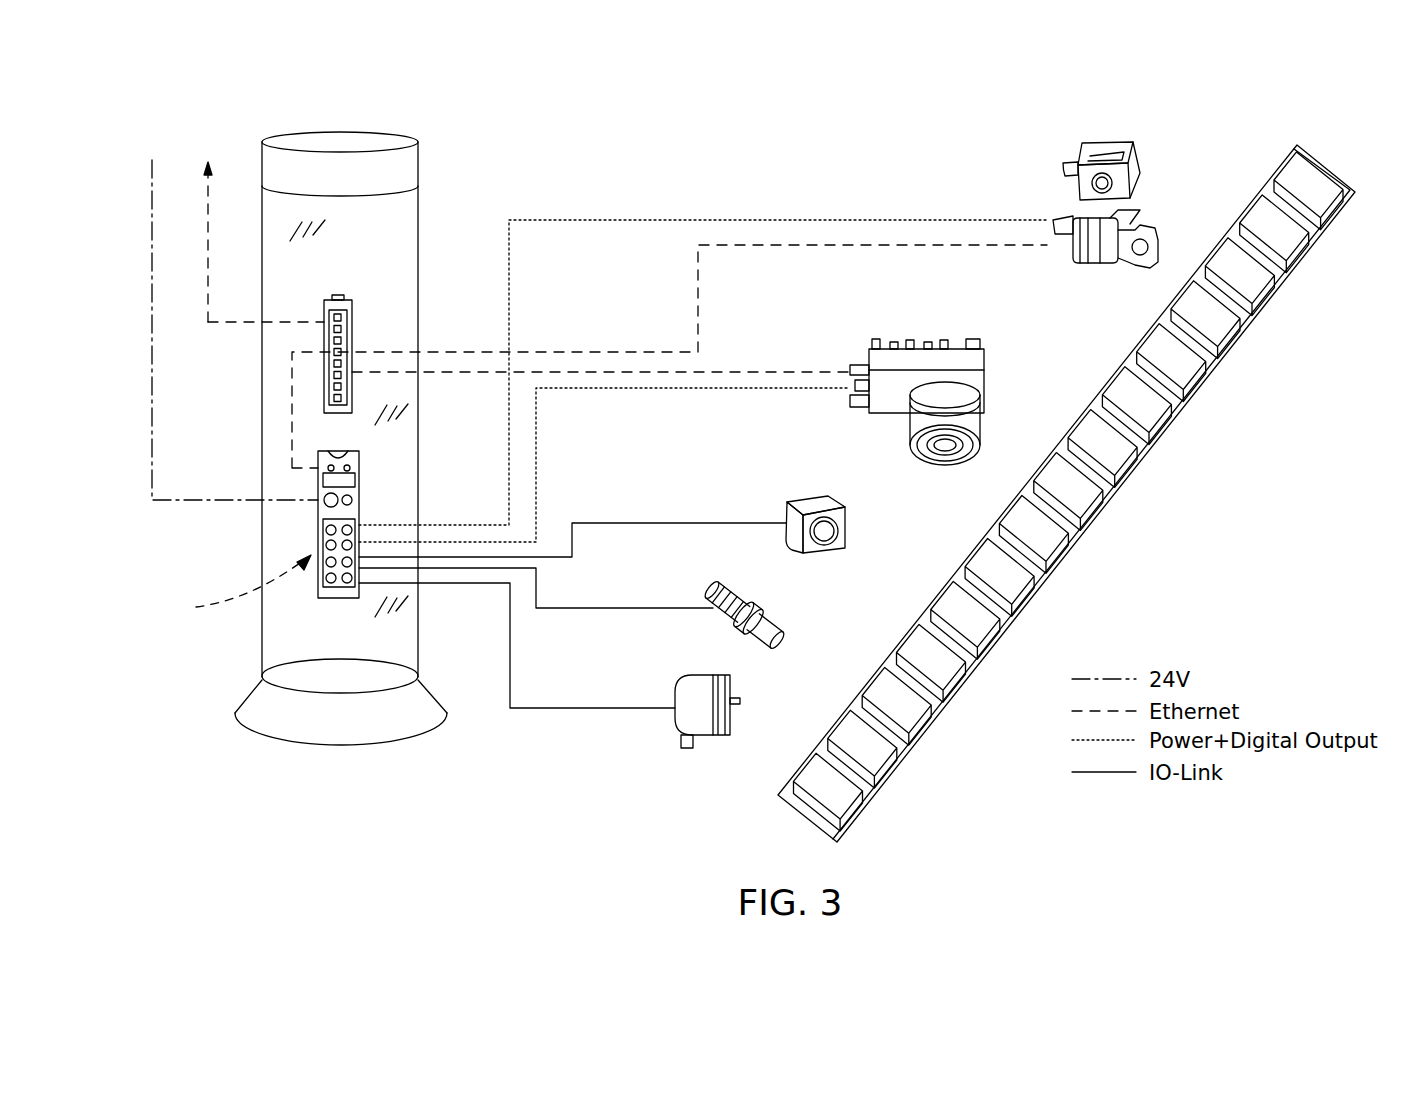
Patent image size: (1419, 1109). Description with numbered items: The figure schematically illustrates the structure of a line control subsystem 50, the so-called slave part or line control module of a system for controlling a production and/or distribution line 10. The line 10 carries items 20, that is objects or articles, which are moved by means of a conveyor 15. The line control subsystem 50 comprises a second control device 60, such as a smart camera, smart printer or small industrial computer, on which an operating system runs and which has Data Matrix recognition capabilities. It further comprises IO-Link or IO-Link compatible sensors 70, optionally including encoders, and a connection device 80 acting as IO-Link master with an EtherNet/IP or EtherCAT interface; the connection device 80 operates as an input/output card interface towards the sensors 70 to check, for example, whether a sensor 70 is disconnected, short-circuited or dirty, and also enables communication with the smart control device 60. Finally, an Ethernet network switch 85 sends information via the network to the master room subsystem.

The line 10 is at (1126, 512).
The conveyor 15 is at (1213, 373).
The items 20 is at (1301, 163).
The line control subsystem 50 is at (299, 64).
The second control device 60 is at (975, 357).
The sensors 70 is at (850, 522).
The connection device 80 is at (359, 470).
The Ethernet network switch 85 is at (352, 320).